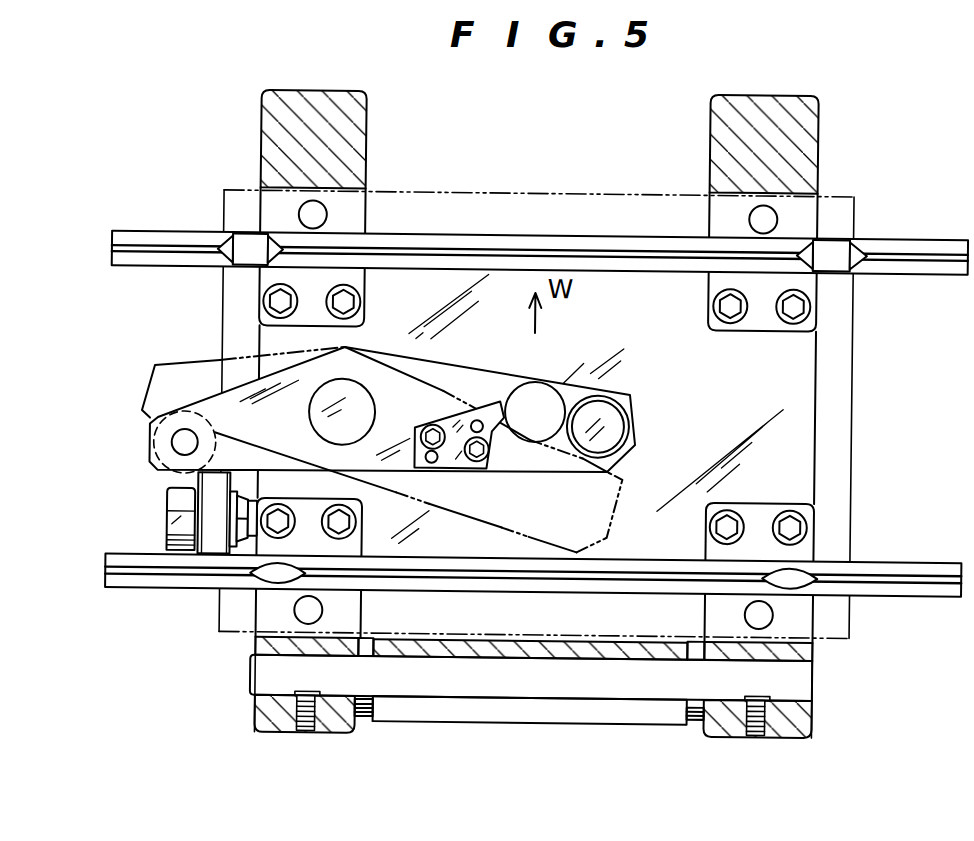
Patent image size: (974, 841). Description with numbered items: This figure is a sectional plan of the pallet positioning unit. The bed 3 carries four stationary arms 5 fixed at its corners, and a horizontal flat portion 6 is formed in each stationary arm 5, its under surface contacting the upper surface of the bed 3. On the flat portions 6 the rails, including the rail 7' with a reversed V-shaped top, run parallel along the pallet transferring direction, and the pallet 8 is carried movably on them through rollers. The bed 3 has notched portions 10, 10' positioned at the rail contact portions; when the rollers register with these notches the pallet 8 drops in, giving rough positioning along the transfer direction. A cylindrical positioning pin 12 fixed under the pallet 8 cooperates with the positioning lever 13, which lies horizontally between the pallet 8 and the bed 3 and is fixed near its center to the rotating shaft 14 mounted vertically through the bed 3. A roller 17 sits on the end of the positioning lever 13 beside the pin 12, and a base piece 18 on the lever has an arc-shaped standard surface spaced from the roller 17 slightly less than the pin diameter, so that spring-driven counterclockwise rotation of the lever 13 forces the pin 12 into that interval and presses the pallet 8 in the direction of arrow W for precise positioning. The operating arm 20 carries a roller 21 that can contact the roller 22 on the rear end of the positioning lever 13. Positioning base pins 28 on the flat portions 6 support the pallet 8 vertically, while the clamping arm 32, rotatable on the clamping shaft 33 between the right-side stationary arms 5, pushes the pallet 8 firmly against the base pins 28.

The bed 3 is at (795, 387).
The stationary arm 5 is at (268, 116).
The horizontal flat portion 6 is at (352, 205).
The rail 7' is at (540, 239).
The pallet 8 is at (854, 464).
The notched portion 10 is at (533, 595).
The notched portion 10' is at (536, 205).
The positioning pin 12 is at (522, 380).
The positioning lever 13 is at (454, 381).
The rotating shaft 14 is at (318, 430).
The roller 17 is at (633, 426).
The base piece 18 is at (446, 466).
The operating arm 20 is at (210, 544).
The roller 21 is at (178, 531).
The roller 22 is at (150, 472).
The positioning base pin 28 is at (325, 217).
The clamping arm 32 is at (583, 712).
The clamping shaft 33 is at (448, 691).